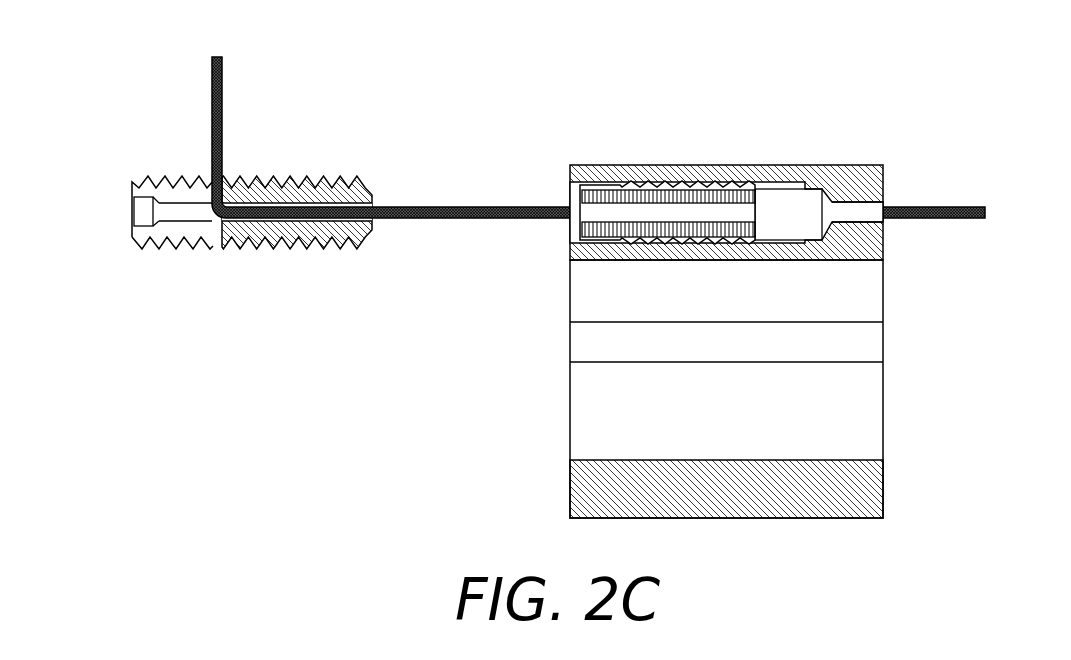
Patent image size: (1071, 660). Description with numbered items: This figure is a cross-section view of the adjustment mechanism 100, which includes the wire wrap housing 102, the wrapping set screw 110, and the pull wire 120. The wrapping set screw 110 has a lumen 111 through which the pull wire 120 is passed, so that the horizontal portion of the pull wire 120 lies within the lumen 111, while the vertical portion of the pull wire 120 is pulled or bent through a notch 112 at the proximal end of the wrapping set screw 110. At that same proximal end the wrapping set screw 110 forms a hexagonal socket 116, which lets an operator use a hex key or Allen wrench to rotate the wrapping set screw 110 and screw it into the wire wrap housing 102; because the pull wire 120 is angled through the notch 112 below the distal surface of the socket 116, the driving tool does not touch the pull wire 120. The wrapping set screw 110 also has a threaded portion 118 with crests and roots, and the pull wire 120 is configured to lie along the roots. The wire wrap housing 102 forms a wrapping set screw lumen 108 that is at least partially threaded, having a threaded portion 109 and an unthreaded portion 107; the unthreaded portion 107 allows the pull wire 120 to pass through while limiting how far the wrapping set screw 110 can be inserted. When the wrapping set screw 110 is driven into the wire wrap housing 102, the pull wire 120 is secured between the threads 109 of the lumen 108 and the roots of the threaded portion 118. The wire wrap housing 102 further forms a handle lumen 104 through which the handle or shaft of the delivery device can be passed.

The adjustment mechanism 100 is at (700, 102).
The wire wrap housing 102 is at (613, 165).
The handle lumen 104 is at (583, 403).
The unthreaded portion 107 is at (769, 189).
The wrapping set screw lumen 108 is at (871, 202).
The threaded portion of the lumen 109 is at (653, 182).
The wrapping set screw 110 is at (310, 118).
The lumen 111 is at (190, 213).
The notch 112 is at (195, 182).
The socket 116 is at (138, 215).
The threaded portion 118 is at (266, 251).
The pull wire 120 is at (217, 113).